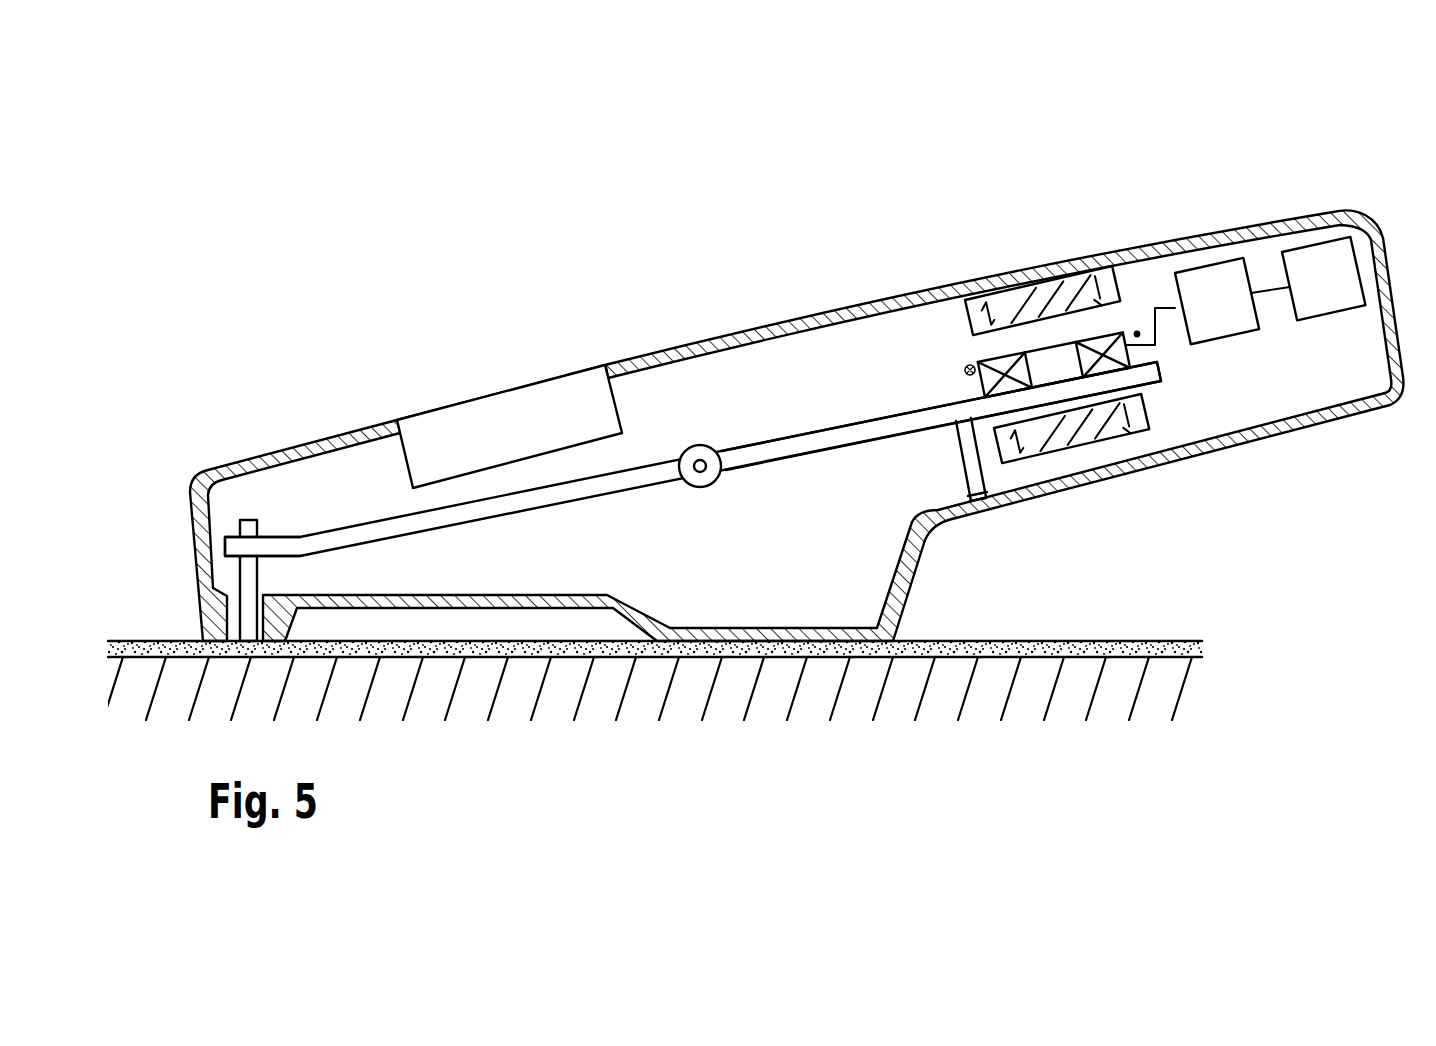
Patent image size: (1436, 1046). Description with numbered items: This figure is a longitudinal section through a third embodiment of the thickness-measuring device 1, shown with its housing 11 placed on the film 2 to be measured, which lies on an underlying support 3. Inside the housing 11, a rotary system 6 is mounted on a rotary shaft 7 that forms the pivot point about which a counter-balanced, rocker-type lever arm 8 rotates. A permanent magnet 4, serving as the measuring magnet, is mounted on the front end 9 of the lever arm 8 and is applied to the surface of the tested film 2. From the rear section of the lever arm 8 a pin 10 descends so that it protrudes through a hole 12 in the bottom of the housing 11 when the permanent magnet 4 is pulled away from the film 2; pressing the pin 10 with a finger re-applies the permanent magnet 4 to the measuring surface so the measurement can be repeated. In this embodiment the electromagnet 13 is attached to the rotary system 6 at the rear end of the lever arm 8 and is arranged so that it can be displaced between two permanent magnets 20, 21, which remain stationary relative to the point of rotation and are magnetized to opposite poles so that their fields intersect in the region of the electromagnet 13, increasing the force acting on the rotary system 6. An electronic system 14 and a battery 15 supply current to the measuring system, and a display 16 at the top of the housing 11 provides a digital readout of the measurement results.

The thickness-measuring device 1 is at (276, 391).
The film 2 is at (1184, 650).
The substrate 3 is at (1183, 683).
The permanent magnet 4 is at (247, 592).
The rotary system 6 is at (790, 470).
The rotary shaft 7 is at (692, 480).
The lever arm 8 is at (847, 437).
The front end of the lever arm 9 is at (260, 543).
The pin 10 is at (983, 509).
The housing 11 is at (815, 317).
The hole 12 is at (992, 504).
The electromagnet 13 is at (983, 392).
The electronic system 14 is at (1203, 272).
The battery 15 is at (1312, 260).
The display 16 is at (556, 390).
The permanent magnet 20 is at (1058, 290).
The permanent magnet 21 is at (1093, 427).